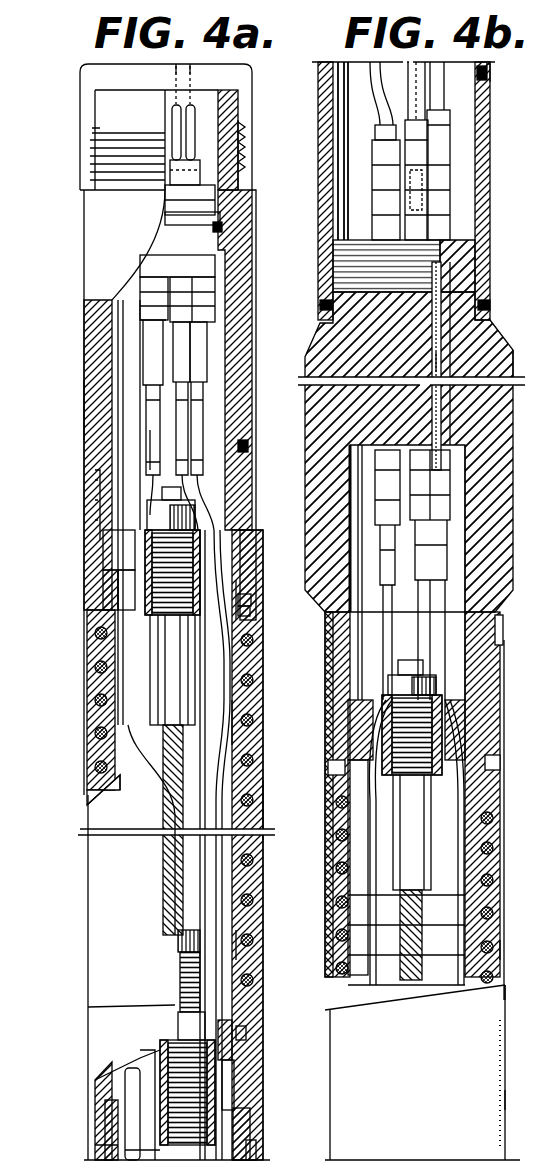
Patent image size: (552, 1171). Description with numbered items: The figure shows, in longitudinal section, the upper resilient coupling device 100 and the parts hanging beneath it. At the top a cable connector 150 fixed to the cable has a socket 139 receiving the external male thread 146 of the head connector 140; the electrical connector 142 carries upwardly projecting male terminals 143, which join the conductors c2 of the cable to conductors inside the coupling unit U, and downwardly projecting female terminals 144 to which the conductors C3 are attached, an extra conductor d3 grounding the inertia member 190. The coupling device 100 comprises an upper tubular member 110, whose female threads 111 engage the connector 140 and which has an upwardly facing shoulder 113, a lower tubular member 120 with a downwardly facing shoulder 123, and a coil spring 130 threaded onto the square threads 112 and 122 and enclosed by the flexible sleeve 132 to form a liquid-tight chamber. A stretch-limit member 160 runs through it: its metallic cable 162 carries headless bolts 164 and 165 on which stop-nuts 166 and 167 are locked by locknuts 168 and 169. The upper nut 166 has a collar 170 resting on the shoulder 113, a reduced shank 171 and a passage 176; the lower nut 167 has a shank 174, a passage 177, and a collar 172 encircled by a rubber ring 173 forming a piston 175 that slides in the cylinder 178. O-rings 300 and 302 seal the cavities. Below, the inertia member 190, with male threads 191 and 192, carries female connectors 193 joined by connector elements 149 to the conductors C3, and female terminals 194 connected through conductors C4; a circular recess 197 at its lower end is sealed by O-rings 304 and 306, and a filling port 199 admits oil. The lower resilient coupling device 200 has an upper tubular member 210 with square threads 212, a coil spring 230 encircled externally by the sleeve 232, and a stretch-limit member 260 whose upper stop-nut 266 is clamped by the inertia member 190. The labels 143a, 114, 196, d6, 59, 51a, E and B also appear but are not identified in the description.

In FIG. 4a, the cable connector 150 is at (80, 90).
In FIG. 4a, the socket 139 is at (96, 132).
In FIG. 4a, the external male thread 146 is at (90, 158).
In FIG. 4a, the male terminals 143 is at (195, 130).
In FIG. 4a, the conductors c2 is at (200, 78).
In FIG. 4a, the electrical connector 142 is at (217, 203).
In FIG. 4a, the O-ring 300 is at (222, 227).
In FIG. 4a, the pin conductors 143a is at (200, 272).
In FIG. 4a, the female terminals 144 is at (195, 296).
In FIG. 4a, the head connector 140 is at (84, 338).
In FIG. 4a, the coupling unit U is at (84, 408).
In FIG. 4b, the coupling unit U is at (490, 128).
In FIG. 4a, the extra conductor d3 is at (148, 432).
In FIG. 4a, the O-ring 302 is at (246, 446).
In FIG. 4a, the female threads 111 is at (92, 492).
In FIG. 4a, the locknut 168 is at (205, 548).
In FIG. 4a, the collar 170 is at (195, 555).
In FIG. 4a, the upper stop-nut 166 is at (250, 578).
In FIG. 4a, the upper tubular member 110 is at (103, 548).
In FIG. 4a, the retainer 114 is at (251, 600).
In FIG. 4a, the circular shoulder 113 is at (120, 590).
In FIG. 4a, the conductors C3 is at (243, 596).
In FIG. 4a, the passage 176 is at (125, 612).
In FIG. 4a, the reduced shank 171 is at (242, 612).
In FIG. 4a, the external square threads 112 is at (98, 642).
In FIG. 4a, the headless bolt 164 is at (155, 672).
In FIG. 4a, the flexible sleeve 132 is at (232, 728).
In FIG. 4a, the coil spring 130 is at (87, 790).
In FIG. 4a, the upper resilient coupling device 100 is at (264, 826).
In FIG. 4a, the stretch-limit member 160 is at (160, 800).
In FIG. 4a, the metallic cable 162 is at (175, 880).
In FIG. 4a, the external square threads 122 is at (236, 908).
In FIG. 4a, the locknut 169 is at (198, 1030).
In FIG. 4a, the headless bolt 165 is at (165, 1050).
In FIG. 4a, the downwardly facing shoulder 123 is at (226, 1062).
In FIG. 4a, the cylinder 178 is at (110, 1080).
In FIG. 4a, the shank 174 is at (230, 1078).
In FIG. 4a, the passage 177 is at (137, 1095).
In FIG. 4a, the lower stop-nut 167 is at (228, 1100).
In FIG. 4a, the lower tubular member 120 is at (105, 1120).
In FIG. 4b, the lower tubular member 120 is at (318, 138).
In FIG. 4a, the collar 172 is at (236, 1122).
In FIG. 4a, the piston 175 is at (105, 1148).
In FIG. 4a, the rubber ring 173 is at (242, 1150).
In FIG. 4b, the lateral filling port 199 is at (487, 78).
In FIG. 4b, the stretch-limit member 260 is at (493, 866).
In FIG. 4b, the female connectors 193 is at (440, 182).
In FIG. 4b, the female connector elements 149 is at (458, 200).
In FIG. 4b, the male threads 191 is at (480, 252).
In FIG. 4b, the O-ring 304 is at (492, 305).
In FIG. 4b, the passage 196 is at (443, 348).
In FIG. 4b, the diameter d6 is at (532, 350).
In FIG. 4b, the conductors C4 is at (514, 350).
In FIG. 4b, the inertia member 190 is at (514, 436).
In FIG. 4b, the female terminals 194 is at (440, 470).
In FIG. 4b, the circular recess 197 is at (462, 536).
In FIG. 4b, the O-ring 306 is at (495, 618).
In FIG. 4b, the male threads 192 is at (482, 662).
In FIG. 4b, the upper tubular member 210 is at (480, 714).
In FIG. 4b, the upper stop-nut 266 is at (482, 740).
In FIG. 4b, the port 59 is at (542, 790).
In FIG. 4b, the square threads 212 is at (493, 818).
In FIG. 4b, the sleeve 232 is at (490, 906).
In FIG. 4b, the pipe section 51a is at (550, 948).
In FIG. 4b, the coil spring 230 is at (490, 978).
In FIG. 4b, the section E is at (523, 998).
In FIG. 4b, the lower resilient coupling device 200 is at (505, 1072).
In FIG. 4b, the section B is at (528, 1096).